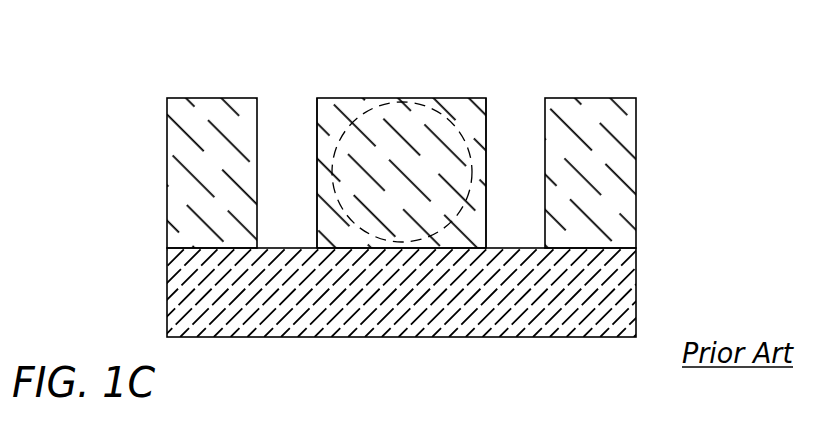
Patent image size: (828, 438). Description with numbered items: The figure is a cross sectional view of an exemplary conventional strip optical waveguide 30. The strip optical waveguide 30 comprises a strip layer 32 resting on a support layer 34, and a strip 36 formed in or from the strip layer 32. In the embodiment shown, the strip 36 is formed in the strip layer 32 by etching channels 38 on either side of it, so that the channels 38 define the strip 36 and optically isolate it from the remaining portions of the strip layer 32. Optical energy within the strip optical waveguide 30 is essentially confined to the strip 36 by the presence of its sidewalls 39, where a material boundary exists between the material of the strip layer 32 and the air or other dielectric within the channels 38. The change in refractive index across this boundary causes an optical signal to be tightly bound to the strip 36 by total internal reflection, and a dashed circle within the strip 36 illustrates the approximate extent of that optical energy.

The strip optical waveguide 30 is at (422, 177).
The strip layer 32 is at (636, 177).
The support layer 34 is at (636, 291).
The strip 36 is at (402, 100).
The channels 38 is at (302, 188).
The sidewalls 39 is at (317, 117).